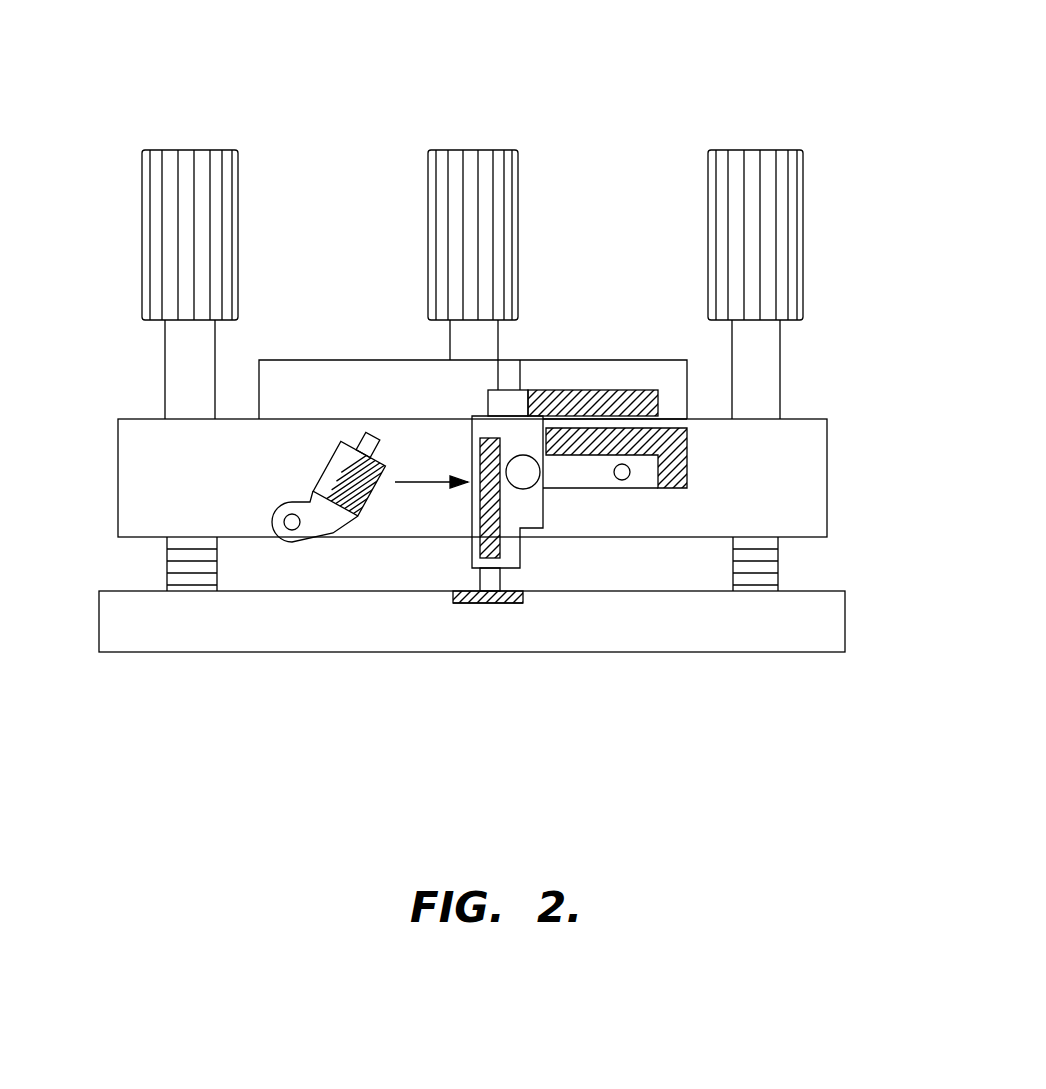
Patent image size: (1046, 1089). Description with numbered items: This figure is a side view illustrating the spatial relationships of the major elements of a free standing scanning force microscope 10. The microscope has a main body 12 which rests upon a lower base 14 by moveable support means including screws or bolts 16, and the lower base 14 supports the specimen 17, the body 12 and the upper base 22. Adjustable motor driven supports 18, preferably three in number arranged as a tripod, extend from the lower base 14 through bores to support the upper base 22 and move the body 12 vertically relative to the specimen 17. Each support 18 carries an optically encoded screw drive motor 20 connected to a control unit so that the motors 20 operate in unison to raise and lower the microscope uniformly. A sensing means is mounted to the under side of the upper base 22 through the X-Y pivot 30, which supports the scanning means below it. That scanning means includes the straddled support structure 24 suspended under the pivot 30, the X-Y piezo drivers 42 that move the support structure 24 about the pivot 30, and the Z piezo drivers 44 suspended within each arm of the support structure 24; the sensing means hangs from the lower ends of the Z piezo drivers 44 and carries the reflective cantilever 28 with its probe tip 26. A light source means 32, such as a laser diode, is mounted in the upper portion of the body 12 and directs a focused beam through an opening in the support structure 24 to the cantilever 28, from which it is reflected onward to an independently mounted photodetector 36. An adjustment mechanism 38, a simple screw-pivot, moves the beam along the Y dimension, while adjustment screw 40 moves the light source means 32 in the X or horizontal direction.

The scanning force microscope 10 is at (836, 54).
The main body 12 is at (142, 450).
The lower base 14 is at (327, 637).
The screws or bolts 16 is at (163, 553).
The specimen 17 is at (522, 600).
The motor driven supports 18 is at (215, 363).
The screw drive motor 20 is at (787, 273).
The upper base 22 is at (313, 380).
The straddled support structure 24 is at (580, 473).
The probe tip 26 is at (453, 590).
The cantilever 28 is at (502, 588).
The X-Y pivot 30 is at (508, 373).
The light source means 32 is at (688, 465).
The photodetector 36 is at (373, 492).
The adjustment mechanism 38 is at (527, 487).
The adjustment screw 40 is at (627, 478).
The X-Y piezo drivers 42 is at (663, 408).
The Z piezo drivers 44 is at (480, 545).